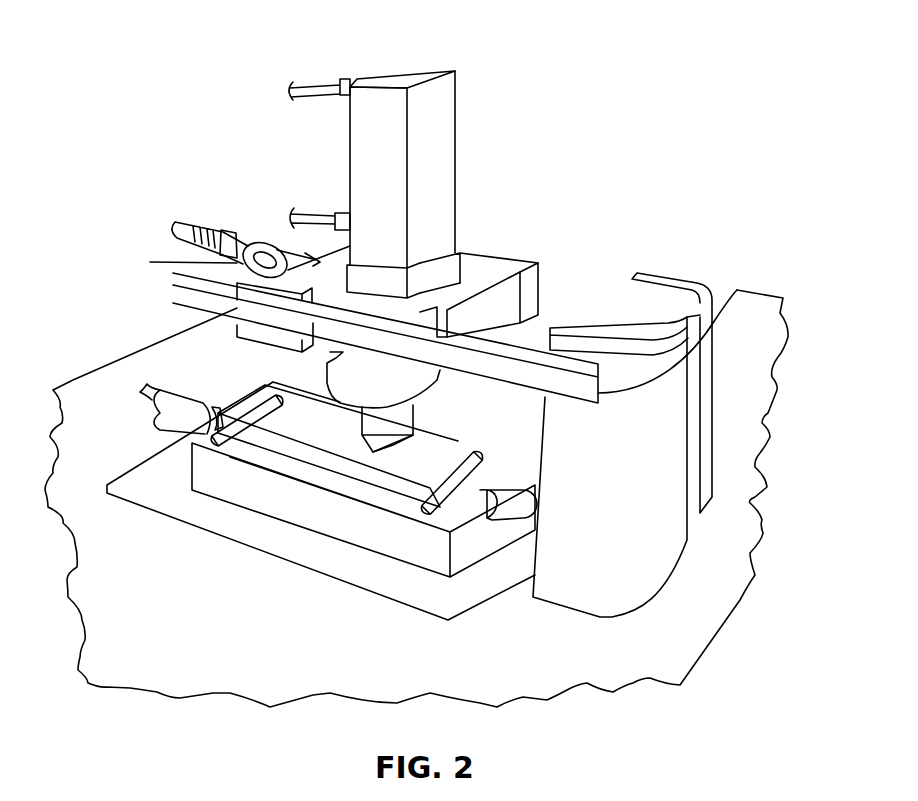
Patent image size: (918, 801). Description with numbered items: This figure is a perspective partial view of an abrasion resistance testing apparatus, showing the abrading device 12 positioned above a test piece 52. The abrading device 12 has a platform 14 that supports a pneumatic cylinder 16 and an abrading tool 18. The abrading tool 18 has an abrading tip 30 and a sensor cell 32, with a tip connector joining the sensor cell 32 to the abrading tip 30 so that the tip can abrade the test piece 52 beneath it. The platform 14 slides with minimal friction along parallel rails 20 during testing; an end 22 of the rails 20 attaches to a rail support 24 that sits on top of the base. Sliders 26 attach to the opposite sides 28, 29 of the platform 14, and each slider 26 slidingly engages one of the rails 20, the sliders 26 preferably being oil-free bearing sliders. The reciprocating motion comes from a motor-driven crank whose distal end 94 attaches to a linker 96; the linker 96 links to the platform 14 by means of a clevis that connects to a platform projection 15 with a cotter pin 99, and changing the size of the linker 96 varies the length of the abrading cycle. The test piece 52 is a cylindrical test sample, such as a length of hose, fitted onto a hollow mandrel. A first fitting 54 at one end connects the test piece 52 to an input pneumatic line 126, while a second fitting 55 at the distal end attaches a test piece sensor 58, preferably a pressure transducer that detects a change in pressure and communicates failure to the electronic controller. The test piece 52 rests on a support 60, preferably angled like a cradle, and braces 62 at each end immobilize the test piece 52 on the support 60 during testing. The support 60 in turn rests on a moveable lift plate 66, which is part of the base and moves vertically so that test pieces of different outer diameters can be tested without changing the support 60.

The abrading device 12 is at (432, 136).
The platform 14 is at (485, 270).
The platform projection 15 is at (310, 258).
The pneumatic cylinder 16 is at (410, 70).
The abrading tool 18 is at (402, 410).
The rails 20 is at (557, 292).
The end of rails 22 is at (735, 288).
The rail support 24 is at (416, 476).
The sliders 26 is at (547, 285).
The side of platform 28 is at (157, 263).
The side of platform 29 is at (470, 252).
The abrading tip 30 is at (400, 440).
The sensor cell 32 is at (383, 380).
The test piece 52 is at (390, 475).
The first fitting 54 is at (173, 413).
The second fitting 55 is at (487, 510).
The test piece sensor 58 is at (520, 513).
The support 60 is at (322, 513).
The braces 62 is at (212, 442).
The lift plate 66 is at (170, 492).
The distal end of crank 94 is at (177, 223).
The linker 96 is at (263, 247).
The cotter pin 99 is at (312, 258).
The input pneumatic line 126 is at (151, 388).